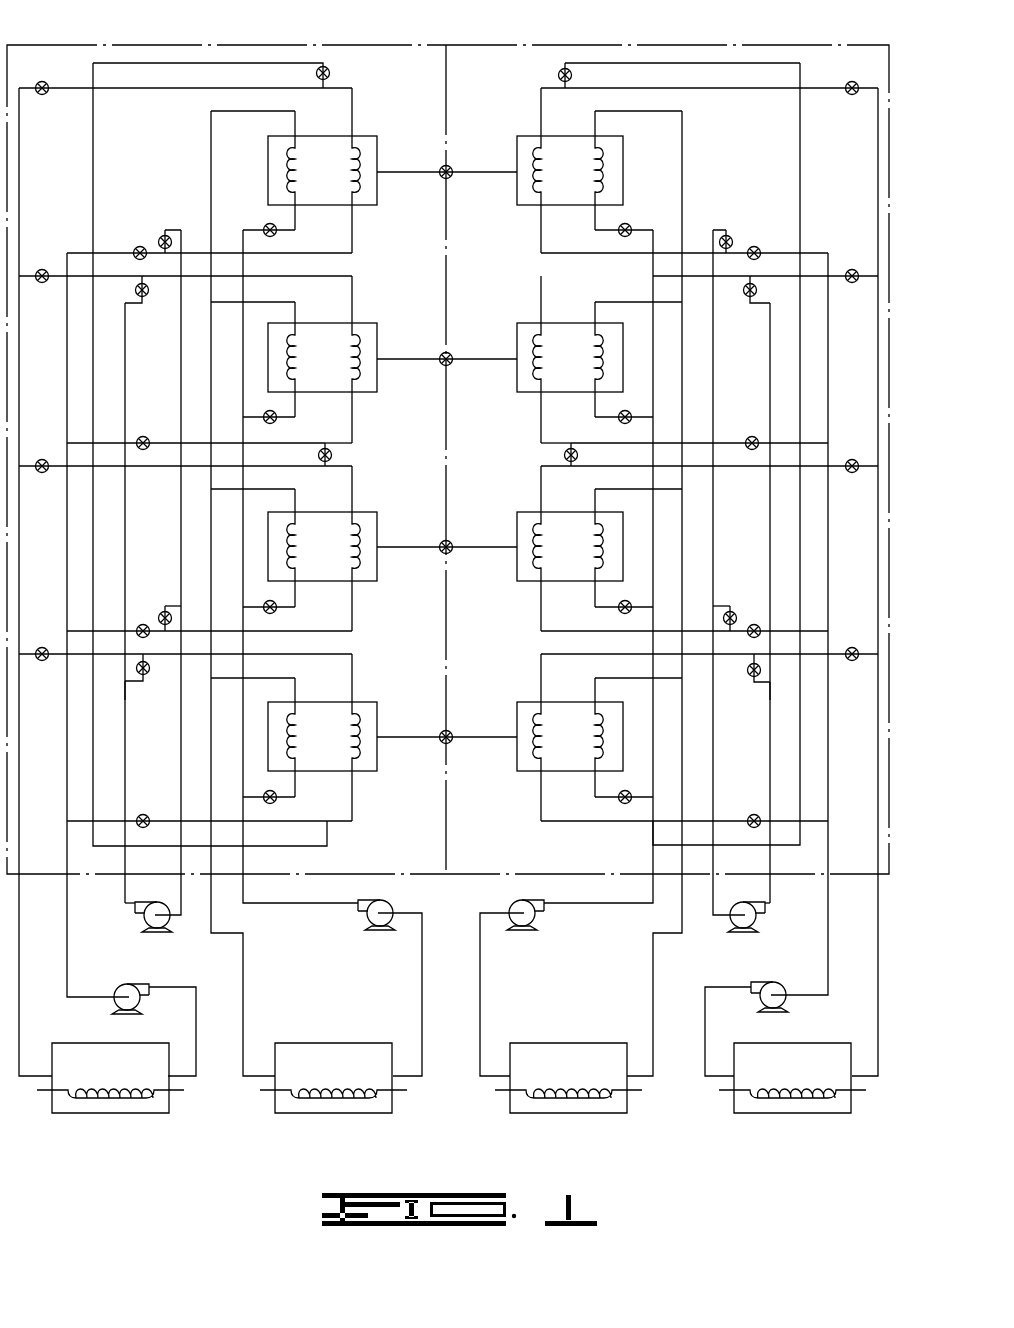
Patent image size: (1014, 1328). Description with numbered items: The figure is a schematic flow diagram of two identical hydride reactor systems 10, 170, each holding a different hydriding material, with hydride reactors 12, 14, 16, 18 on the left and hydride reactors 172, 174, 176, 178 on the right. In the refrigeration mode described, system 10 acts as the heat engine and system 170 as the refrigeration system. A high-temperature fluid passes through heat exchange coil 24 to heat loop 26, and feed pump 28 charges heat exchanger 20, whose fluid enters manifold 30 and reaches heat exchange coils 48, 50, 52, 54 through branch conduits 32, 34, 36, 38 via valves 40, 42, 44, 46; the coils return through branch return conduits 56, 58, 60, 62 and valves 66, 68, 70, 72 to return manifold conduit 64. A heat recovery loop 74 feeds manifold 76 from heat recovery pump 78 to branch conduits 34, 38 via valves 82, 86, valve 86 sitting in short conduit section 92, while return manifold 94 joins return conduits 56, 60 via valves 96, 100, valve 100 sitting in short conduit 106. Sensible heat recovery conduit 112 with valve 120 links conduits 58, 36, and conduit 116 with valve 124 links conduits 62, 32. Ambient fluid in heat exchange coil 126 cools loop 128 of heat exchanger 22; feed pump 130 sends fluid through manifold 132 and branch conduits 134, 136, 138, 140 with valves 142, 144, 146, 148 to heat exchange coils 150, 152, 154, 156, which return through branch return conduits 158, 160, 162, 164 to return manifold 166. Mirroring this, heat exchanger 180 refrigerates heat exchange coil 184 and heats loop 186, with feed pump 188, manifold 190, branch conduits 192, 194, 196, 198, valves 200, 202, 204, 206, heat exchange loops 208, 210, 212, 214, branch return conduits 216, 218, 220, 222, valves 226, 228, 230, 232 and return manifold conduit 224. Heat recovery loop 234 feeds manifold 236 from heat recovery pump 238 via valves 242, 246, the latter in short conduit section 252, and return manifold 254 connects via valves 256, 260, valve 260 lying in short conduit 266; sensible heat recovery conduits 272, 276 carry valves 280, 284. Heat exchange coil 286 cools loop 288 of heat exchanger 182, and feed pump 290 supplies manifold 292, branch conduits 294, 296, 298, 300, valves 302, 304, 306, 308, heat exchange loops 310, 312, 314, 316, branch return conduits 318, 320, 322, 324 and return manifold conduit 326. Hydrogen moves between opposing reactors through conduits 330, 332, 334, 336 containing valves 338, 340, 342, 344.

The hydride reactor system 10 is at (279, 45).
The hydride reactor system 170 is at (612, 45).
The hydride reactor 12 is at (360, 136).
The hydride reactor 14 is at (360, 323).
The hydride reactor 16 is at (360, 512).
The hydride reactor 18 is at (360, 702).
The heat exchanger 20 is at (104, 1117).
The heat exchanger 22 is at (320, 1043).
The heat exchange coil 24 is at (107, 1086).
The loop 26 is at (194, 1004).
The feed pump 28 is at (127, 982).
The manifold 30 is at (22, 348).
The branch conduit 32 is at (30, 90).
The branch conduit 34 is at (30, 278).
The branch conduit 36 is at (30, 470).
The branch conduit 38 is at (30, 658).
The valve 40 is at (46, 70).
The valve 42 is at (46, 258).
The valve 44 is at (46, 446).
The valve 46 is at (46, 634).
The heat exchange coil 48 is at (352, 176).
The heat exchange coil 50 is at (352, 364).
The heat exchange coil 52 is at (352, 553).
The heat exchange coil 54 is at (352, 742).
The branch return conduit 56 is at (325, 255).
The branch return conduit 58 is at (302, 446).
The branch return conduit 60 is at (302, 634).
The branch return conduit 62 is at (302, 824).
The return manifold conduit 64 is at (67, 740).
The valve 66 is at (139, 247).
The valve 68 is at (144, 436).
The valve 70 is at (150, 608).
The valve 72 is at (145, 812).
The heat recovery loop 74 is at (125, 888).
The manifold 76 is at (125, 510).
The heat recovery pump 78 is at (142, 914).
The valve 82 is at (146, 296).
The valve 86 is at (150, 670).
The short conduit section 92 is at (127, 692).
The return manifold 94 is at (180, 490).
The valve 96 is at (164, 236).
The valve 100 is at (163, 611).
The short conduit 106 is at (177, 580).
The sensible heat recovery conduit 112 is at (353, 445).
The sensible heat recovery conduit 116 is at (330, 838).
The valve 120 is at (332, 457).
The valve 124 is at (330, 73).
The heat exchange coil 126 is at (331, 1086).
The loop 128 is at (420, 968).
The feed pump 130 is at (366, 914).
The manifold 132 is at (243, 700).
The branch conduit 134 is at (296, 791).
The branch conduit 136 is at (296, 601).
The branch conduit 138 is at (296, 411).
The branch conduit 140 is at (296, 223).
The valve 142 is at (277, 802).
The valve 144 is at (277, 612).
The valve 146 is at (277, 422).
The valve 148 is at (277, 235).
The heat exchange coil 150 is at (300, 742).
The heat exchange coil 152 is at (300, 553).
The heat exchange coil 154 is at (300, 364).
The heat exchange coil 156 is at (300, 176).
The branch return conduit 158 is at (262, 681).
The branch return conduit 160 is at (262, 492).
The branch return conduit 162 is at (262, 304).
The branch return conduit 164 is at (250, 120).
The return manifold 166 is at (245, 970).
The hydride reactor 172 is at (524, 136).
The hydride reactor 174 is at (524, 323).
The hydride reactor 176 is at (524, 512).
The hydride reactor 178 is at (524, 702).
The heat exchanger 180 is at (802, 1043).
The heat exchanger 182 is at (562, 1043).
The heat exchange coil 184 is at (796, 1086).
The loop 186 is at (706, 1018).
The feed pump 188 is at (782, 982).
The manifold 190 is at (876, 350).
The branch conduit 192 is at (868, 90).
The branch conduit 194 is at (870, 284).
The branch conduit 196 is at (870, 474).
The branch conduit 198 is at (870, 662).
The valve 200 is at (862, 74).
The valve 202 is at (854, 268).
The valve 204 is at (854, 460).
The valve 206 is at (854, 648).
The heat exchange loop 208 is at (543, 180).
The heat exchange loop 210 is at (543, 368).
The heat exchange loop 212 is at (543, 556).
The heat exchange loop 214 is at (545, 744).
The branch return conduit 216 is at (572, 255).
The branch return conduit 218 is at (636, 447).
The branch return conduit 220 is at (592, 624).
The branch return conduit 222 is at (592, 824).
The return manifold conduit 224 is at (828, 800).
The valve 226 is at (756, 248).
The valve 228 is at (752, 436).
The valve 230 is at (754, 618).
The valve 232 is at (754, 812).
The heat recovery loop 234 is at (772, 888).
The manifold 236 is at (770, 521).
The heat recovery pump 238 is at (758, 914).
The valve 242 is at (748, 297).
The valve 246 is at (754, 677).
The short conduit section 252 is at (770, 690).
The return manifold 254 is at (713, 500).
The valve 256 is at (729, 235).
The valve 260 is at (731, 610).
The short conduit 266 is at (713, 580).
The sensible heat recovery conduit 272 is at (564, 453).
The sensible heat recovery conduit 276 is at (603, 847).
The valve 280 is at (564, 458).
The valve 284 is at (560, 75).
The heat exchange coil 286 is at (567, 1086).
The loop 288 is at (482, 973).
The feed pump 290 is at (537, 914).
The manifold 292 is at (597, 708).
The branch conduit 294 is at (594, 790).
The branch conduit 296 is at (594, 600).
The branch conduit 298 is at (594, 410).
The branch conduit 300 is at (594, 224).
The valve 302 is at (620, 800).
The valve 304 is at (620, 610).
The valve 306 is at (620, 422).
The valve 308 is at (620, 235).
The heat exchange loop 310 is at (595, 738).
The heat exchange loop 312 is at (595, 549).
The heat exchange loop 314 is at (595, 360).
The heat exchange loop 316 is at (595, 172).
The branch return conduit 318 is at (636, 682).
The branch return conduit 320 is at (636, 490).
The branch return conduit 322 is at (645, 306).
The branch return conduit 324 is at (622, 112).
The return manifold conduit 326 is at (655, 977).
The conduit 330 is at (400, 166).
The conduit 332 is at (398, 359).
The conduit 334 is at (398, 547).
The conduit 336 is at (398, 737).
The valve 338 is at (448, 172).
The valve 340 is at (449, 359).
The valve 342 is at (449, 547).
The valve 344 is at (449, 737).